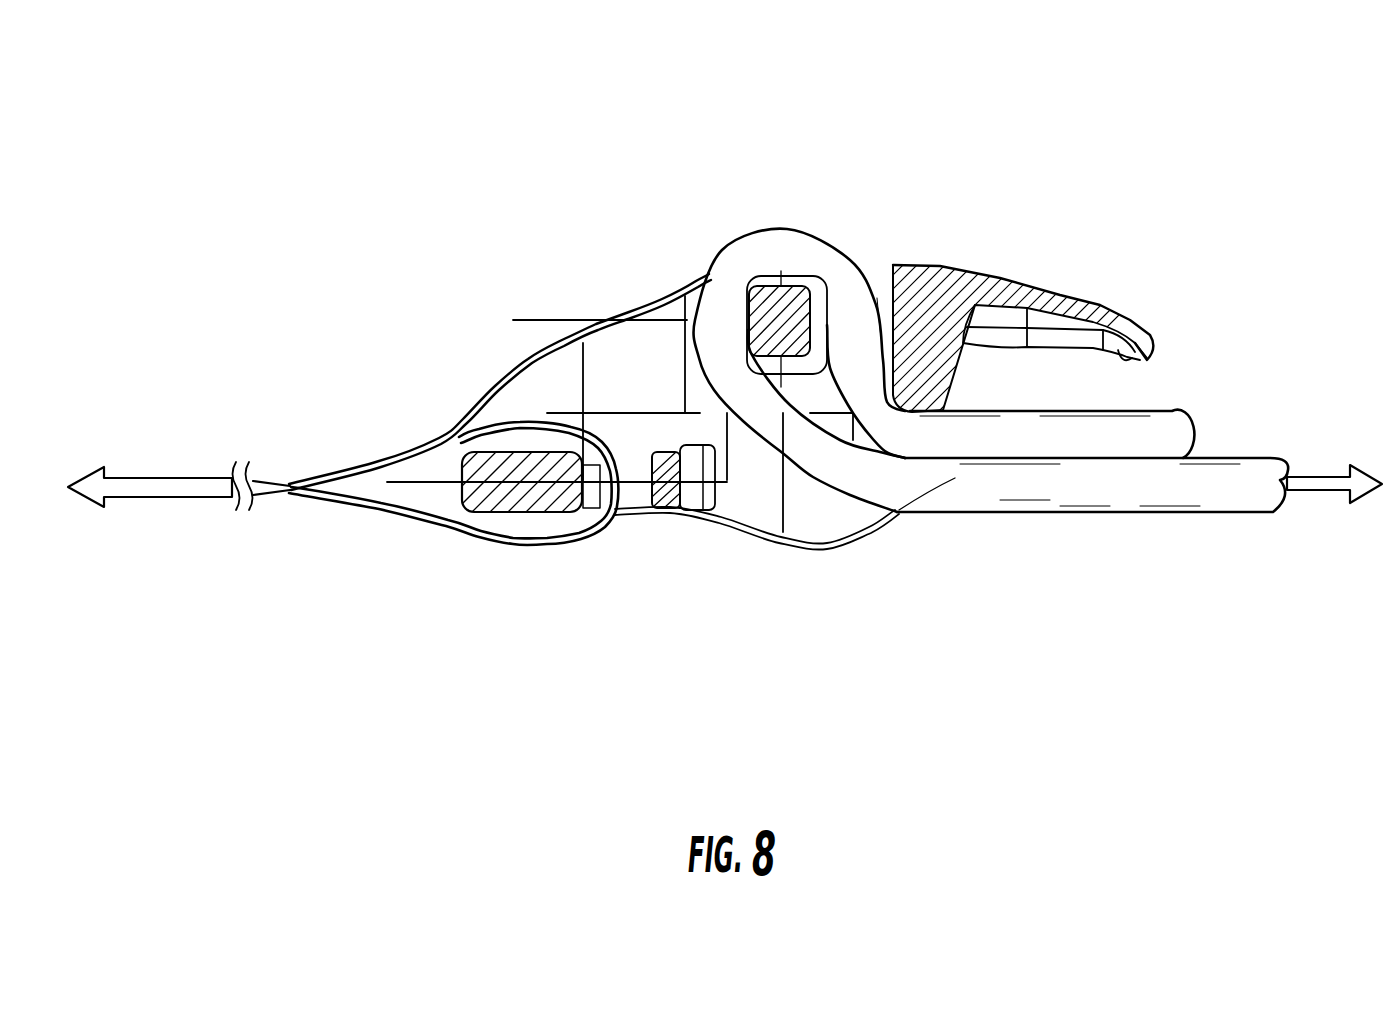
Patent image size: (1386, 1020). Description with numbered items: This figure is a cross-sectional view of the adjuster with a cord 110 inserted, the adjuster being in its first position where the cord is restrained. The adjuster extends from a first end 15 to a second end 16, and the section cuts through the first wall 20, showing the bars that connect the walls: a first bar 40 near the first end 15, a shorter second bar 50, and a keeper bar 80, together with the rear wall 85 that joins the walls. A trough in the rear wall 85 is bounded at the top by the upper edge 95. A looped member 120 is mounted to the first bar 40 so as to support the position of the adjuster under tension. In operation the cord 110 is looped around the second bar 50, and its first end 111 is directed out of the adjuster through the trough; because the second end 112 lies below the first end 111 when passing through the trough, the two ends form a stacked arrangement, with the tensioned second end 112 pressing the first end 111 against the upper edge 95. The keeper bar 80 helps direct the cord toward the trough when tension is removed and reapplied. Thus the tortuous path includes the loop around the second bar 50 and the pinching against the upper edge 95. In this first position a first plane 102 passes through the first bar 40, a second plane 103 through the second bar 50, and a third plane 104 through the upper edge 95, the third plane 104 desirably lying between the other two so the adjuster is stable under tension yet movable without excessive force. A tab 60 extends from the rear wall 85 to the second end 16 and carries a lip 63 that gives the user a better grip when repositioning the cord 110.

The first end 15 is at (457, 468).
The second end 16 is at (1158, 340).
The first wall 20 is at (662, 300).
The first bar 40 is at (474, 498).
The second bar 50 is at (792, 286).
The tab 60 is at (1005, 278).
The lip 63 is at (1125, 358).
The keeper bar 80 is at (673, 488).
The rear wall 85 is at (937, 368).
The upper edge 95 is at (905, 305).
The first plane 102 is at (395, 487).
The second plane 103 is at (519, 320).
The third plane 104 is at (627, 415).
The cord 110 is at (1075, 512).
The first end 111 is at (1163, 440).
The second end 112 is at (1167, 490).
The looped member 120 is at (290, 496).